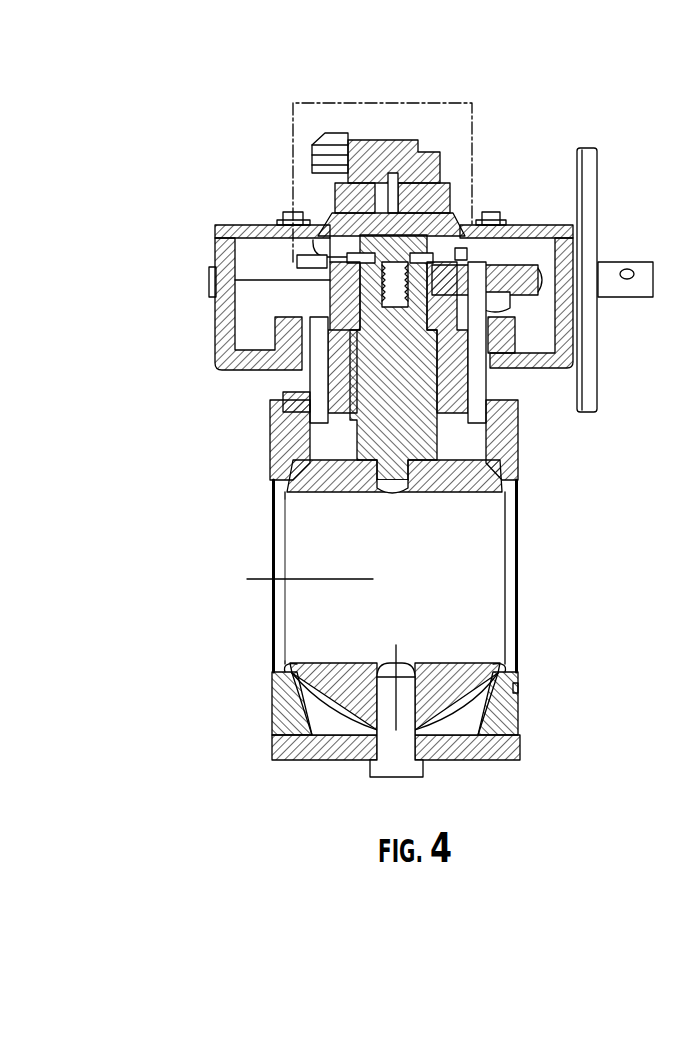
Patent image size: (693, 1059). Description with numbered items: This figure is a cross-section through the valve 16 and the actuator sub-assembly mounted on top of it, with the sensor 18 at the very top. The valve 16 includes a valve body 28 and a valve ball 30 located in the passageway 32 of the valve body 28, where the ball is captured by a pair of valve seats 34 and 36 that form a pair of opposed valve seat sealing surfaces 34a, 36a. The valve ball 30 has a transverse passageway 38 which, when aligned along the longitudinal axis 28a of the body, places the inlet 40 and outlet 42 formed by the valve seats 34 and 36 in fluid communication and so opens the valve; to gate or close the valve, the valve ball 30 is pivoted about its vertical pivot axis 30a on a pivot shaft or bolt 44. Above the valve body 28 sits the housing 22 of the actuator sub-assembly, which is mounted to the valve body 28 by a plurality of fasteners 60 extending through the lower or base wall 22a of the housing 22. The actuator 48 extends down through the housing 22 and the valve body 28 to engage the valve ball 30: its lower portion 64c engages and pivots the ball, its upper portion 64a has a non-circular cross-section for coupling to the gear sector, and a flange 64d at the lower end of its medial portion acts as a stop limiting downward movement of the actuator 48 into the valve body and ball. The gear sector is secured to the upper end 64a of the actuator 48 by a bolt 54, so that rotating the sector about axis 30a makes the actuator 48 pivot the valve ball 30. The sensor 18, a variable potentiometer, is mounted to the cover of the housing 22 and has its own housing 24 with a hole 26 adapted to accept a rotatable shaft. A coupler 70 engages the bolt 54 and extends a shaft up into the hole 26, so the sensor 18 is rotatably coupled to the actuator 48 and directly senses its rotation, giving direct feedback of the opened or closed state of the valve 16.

The valve 16 is at (253, 562).
The sensor 18 is at (445, 133).
The housing 22 is at (215, 255).
The base wall 22a is at (542, 370).
The sensor housing 24 is at (348, 177).
The hole 26 is at (410, 203).
The valve body 28 is at (403, 661).
The longitudinal axis 28a is at (360, 578).
The valve ball 30 is at (520, 690).
The vertical pivot axis 30a is at (373, 712).
The passageway 32 is at (323, 722).
The valve seat 34 is at (272, 712).
The valve seat sealing surface 34a is at (297, 665).
The valve seat 36 is at (510, 712).
The valve seat sealing surface 36a is at (497, 665).
The transverse passageway 38 is at (474, 560).
The inlet 40 is at (278, 608).
The outlet 42 is at (520, 578).
The pivot bolt 44 is at (420, 775).
The actuator 48 is at (437, 348).
The bolt 54 is at (463, 217).
The fasteners 60 is at (300, 383).
The upper portion 64a is at (420, 284).
The lower portion 64c is at (440, 440).
The flange 64d is at (350, 412).
The coupler 70 is at (445, 207).